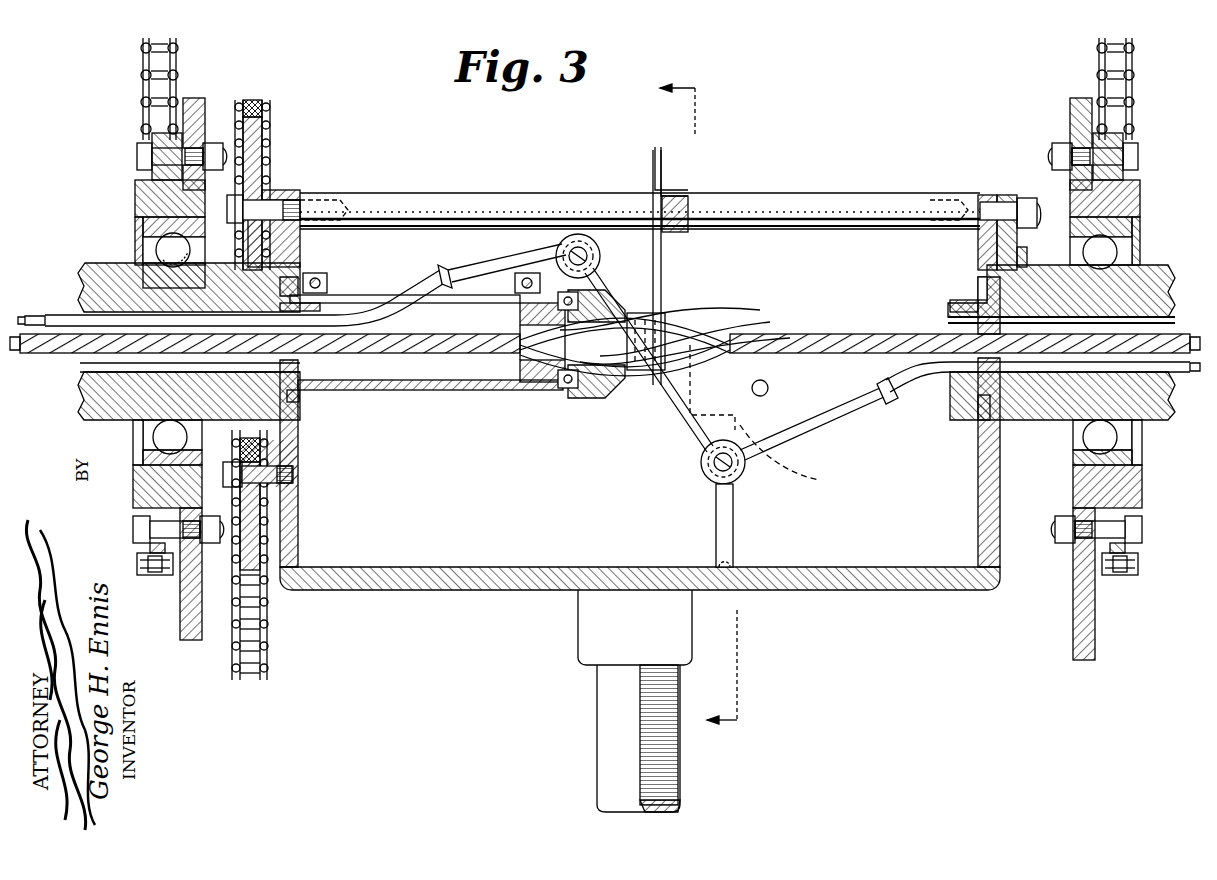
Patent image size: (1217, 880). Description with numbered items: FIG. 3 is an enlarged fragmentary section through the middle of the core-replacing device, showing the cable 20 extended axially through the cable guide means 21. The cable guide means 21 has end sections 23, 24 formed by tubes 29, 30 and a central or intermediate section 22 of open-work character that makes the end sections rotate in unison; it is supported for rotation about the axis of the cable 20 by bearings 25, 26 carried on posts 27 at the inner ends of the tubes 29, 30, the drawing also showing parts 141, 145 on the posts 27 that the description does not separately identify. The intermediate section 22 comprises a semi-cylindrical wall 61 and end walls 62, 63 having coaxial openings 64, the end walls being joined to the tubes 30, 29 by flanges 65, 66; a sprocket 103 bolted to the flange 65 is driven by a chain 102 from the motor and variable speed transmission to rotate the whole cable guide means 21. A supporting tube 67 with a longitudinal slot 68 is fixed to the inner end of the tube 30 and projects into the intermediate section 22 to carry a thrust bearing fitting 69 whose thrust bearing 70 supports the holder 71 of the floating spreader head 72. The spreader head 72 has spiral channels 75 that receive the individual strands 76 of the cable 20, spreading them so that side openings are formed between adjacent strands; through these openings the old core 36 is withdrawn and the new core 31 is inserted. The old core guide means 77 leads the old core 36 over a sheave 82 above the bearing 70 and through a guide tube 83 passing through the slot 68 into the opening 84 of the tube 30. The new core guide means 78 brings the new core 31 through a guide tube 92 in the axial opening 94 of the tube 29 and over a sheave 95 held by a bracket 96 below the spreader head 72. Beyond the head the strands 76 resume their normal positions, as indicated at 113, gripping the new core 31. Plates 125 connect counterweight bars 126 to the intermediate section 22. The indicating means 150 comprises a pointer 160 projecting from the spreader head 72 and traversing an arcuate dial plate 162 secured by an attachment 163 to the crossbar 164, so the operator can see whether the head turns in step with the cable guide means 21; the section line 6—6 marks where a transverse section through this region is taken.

The section line 6- 6 is at (685, 406).
The cable 20 is at (375, 358).
The cable guide means 21 is at (852, 186).
The central or intermediate section 22 is at (935, 580).
The end section 23 is at (1155, 262).
The end section 24 is at (93, 258).
The bearing 25 is at (1108, 245).
The bearing 26 is at (168, 247).
The posts 27 is at (182, 628).
The tube 29 is at (1168, 420).
The tube 30 is at (84, 416).
The new core 31 is at (788, 448).
The old core 36 is at (472, 264).
The semi-cylindrical wall 61 is at (425, 592).
The end wall 62 is at (298, 440).
The end wall 63 is at (978, 440).
The coaxial openings 64 is at (298, 395).
The flange 65 is at (292, 212).
The flange 66 is at (995, 192).
The supporting tube 67 is at (443, 390).
The longitudinal slot 68 is at (370, 296).
The thrust bearing fitting 69 is at (560, 395).
The thrust bearing 70 is at (572, 392).
The holder 71 is at (605, 400).
The spreader head 72 is at (665, 340).
The spiral guides or channels 75 is at (665, 310).
The strands 76 is at (672, 330).
The old core guide means 77 is at (425, 280).
The new core guide means 78 is at (900, 402).
The sheave 82 is at (578, 250).
The guide tube 83 is at (68, 312).
The lower left tube 84 is at (98, 366).
The guide tube 92 is at (1160, 375).
The axial opening 94 is at (1168, 330).
The sheave 95 is at (712, 478).
The bracket 96 is at (727, 540).
The chain 102 is at (262, 640).
The sprocket 103 is at (255, 140).
The strands resumed position 113 is at (508, 380).
The plates 125 is at (600, 655).
The bars 126 is at (622, 735).
The clamp post 141 is at (165, 133).
The drive chain 145 is at (146, 62).
The indicating means 150 is at (645, 178).
The pointer 160 is at (650, 272).
The arcuate dial plate 162 is at (662, 147).
The attachment 163 is at (688, 200).
The crossbar 164 is at (763, 198).